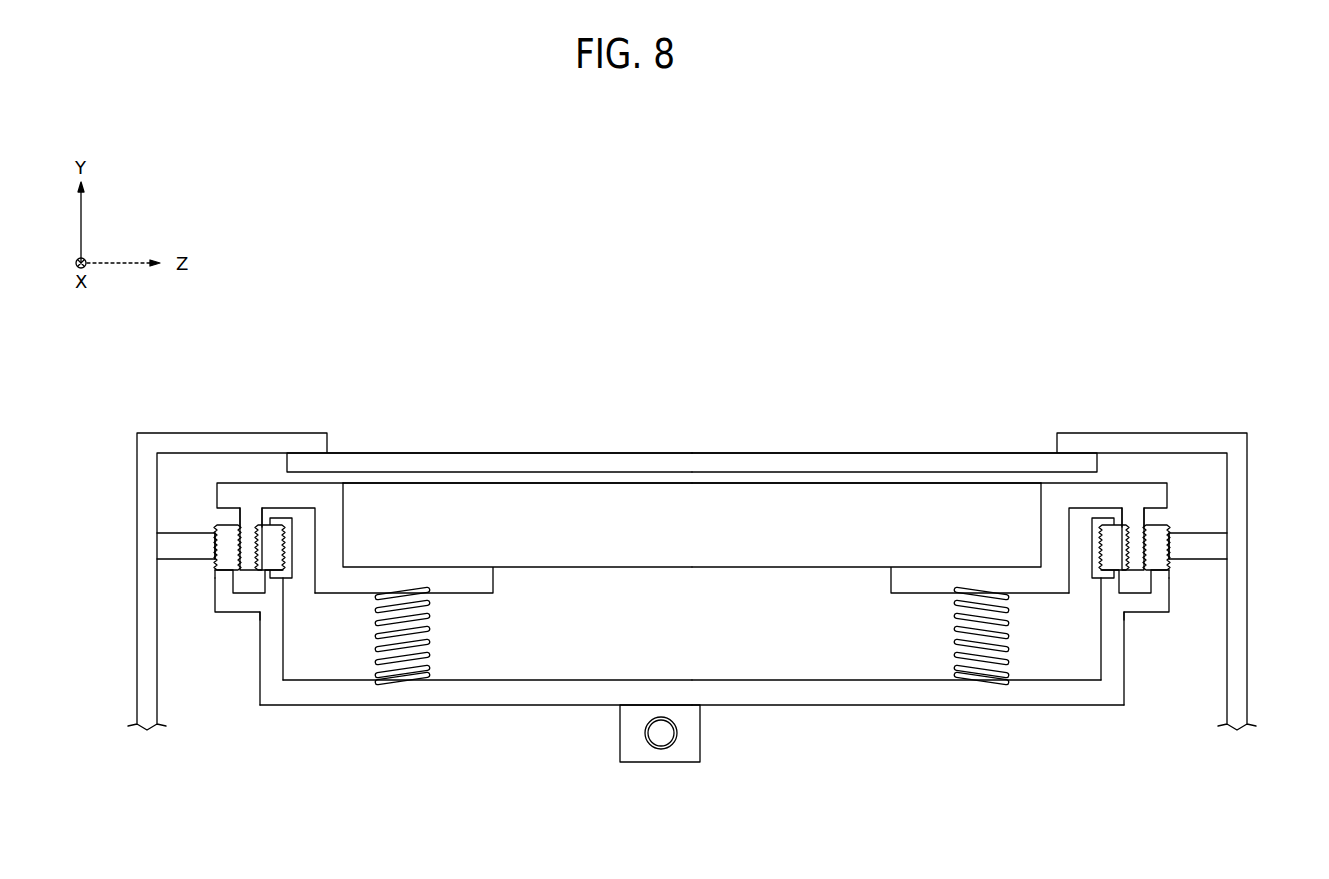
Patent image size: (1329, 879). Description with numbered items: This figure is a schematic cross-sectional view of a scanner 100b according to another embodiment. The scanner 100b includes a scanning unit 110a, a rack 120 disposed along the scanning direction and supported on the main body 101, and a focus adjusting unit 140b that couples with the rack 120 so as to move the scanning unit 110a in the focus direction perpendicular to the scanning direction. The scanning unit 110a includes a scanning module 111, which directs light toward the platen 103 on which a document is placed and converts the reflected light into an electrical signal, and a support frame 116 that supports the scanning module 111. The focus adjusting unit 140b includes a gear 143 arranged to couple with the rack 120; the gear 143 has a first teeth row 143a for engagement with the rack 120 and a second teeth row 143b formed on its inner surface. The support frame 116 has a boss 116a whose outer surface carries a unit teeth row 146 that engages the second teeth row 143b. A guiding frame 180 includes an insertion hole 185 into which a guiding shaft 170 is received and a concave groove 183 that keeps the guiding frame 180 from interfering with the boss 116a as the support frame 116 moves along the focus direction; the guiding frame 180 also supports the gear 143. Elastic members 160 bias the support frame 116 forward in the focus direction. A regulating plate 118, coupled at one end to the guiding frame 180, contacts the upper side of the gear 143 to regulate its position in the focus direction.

The scanner 100b is at (1045, 234).
The main body 101 is at (140, 650).
The platen 103 is at (560, 452).
The scanning unit 110a is at (808, 478).
The scanning module 111 is at (643, 500).
The support frame 116 is at (330, 493).
The boss 116a is at (250, 512).
The regulating plate 118 is at (292, 580).
The rack 120 is at (160, 548).
The focus adjusting unit 140b is at (203, 362).
The gear 143 is at (220, 538).
The first teeth row 143a is at (217, 565).
The second teeth row 143b is at (233, 558).
The unit teeth row 146 is at (242, 523).
The elastic member 160 is at (417, 668).
The guiding shaft 170 is at (657, 735).
The guiding frame 180 is at (787, 690).
The concave groove 183 is at (247, 597).
The insertion hole 185 is at (675, 737).